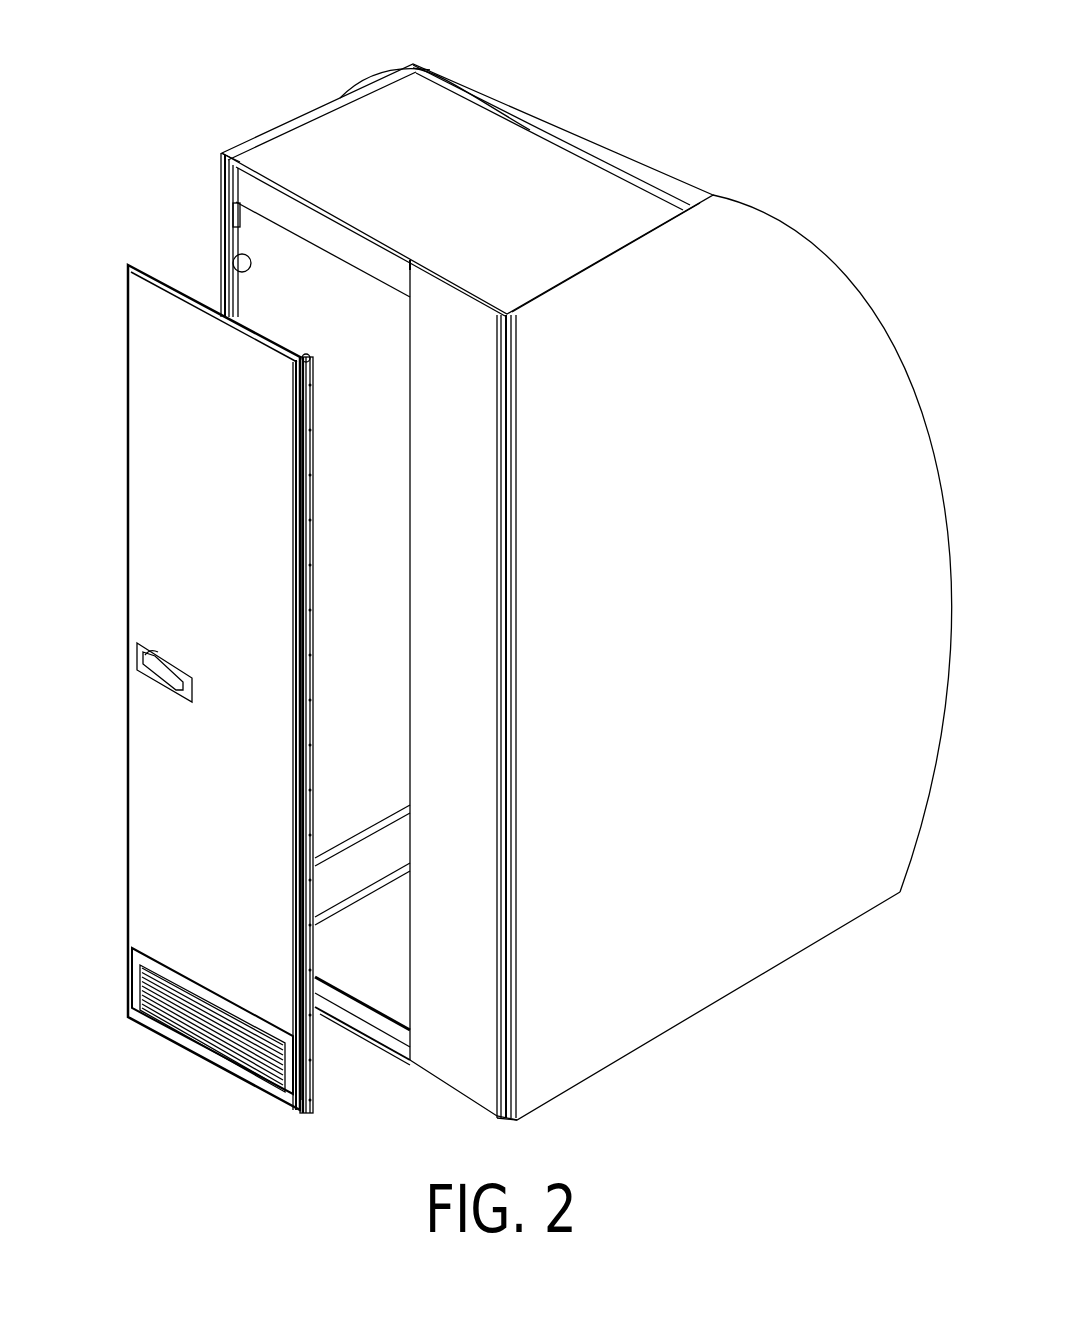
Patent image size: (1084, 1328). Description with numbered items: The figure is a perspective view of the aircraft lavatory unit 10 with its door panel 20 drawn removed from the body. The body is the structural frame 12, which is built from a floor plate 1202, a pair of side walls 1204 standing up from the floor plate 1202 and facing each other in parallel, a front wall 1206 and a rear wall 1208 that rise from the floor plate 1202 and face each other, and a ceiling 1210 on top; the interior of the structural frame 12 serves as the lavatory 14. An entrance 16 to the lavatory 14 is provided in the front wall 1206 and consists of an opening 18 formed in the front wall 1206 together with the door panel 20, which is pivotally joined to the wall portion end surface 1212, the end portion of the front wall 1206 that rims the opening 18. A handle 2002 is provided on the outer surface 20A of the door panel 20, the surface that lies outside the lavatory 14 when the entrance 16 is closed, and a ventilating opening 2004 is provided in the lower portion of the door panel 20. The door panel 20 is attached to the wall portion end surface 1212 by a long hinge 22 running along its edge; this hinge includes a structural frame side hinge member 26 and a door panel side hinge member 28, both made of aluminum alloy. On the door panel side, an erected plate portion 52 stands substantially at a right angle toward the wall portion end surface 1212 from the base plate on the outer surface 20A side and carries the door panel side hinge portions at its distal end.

The aircraft lavatory unit 10 is at (568, 95).
The structural frame 12 is at (410, 110).
The lavatory 14 is at (377, 486).
The entrance 16 is at (413, 765).
The opening 18 is at (235, 270).
The door panel 20 is at (187, 505).
The outer surface 20A is at (162, 765).
The long hinge 22 is at (318, 610).
The structural frame side hinge member 26 is at (313, 366).
The door panel side hinge member 28 is at (305, 355).
The erected plate portion 52 is at (295, 378).
The floor plate 1202 is at (383, 987).
The side walls 1204 is at (283, 118).
The front wall 1206 is at (457, 527).
The rear wall 1208 is at (633, 177).
The ceiling 1210 is at (493, 238).
The wall portion end surface 1212 is at (408, 652).
The handle 2002 is at (157, 678).
The ventilating opening 2004 is at (222, 1037).